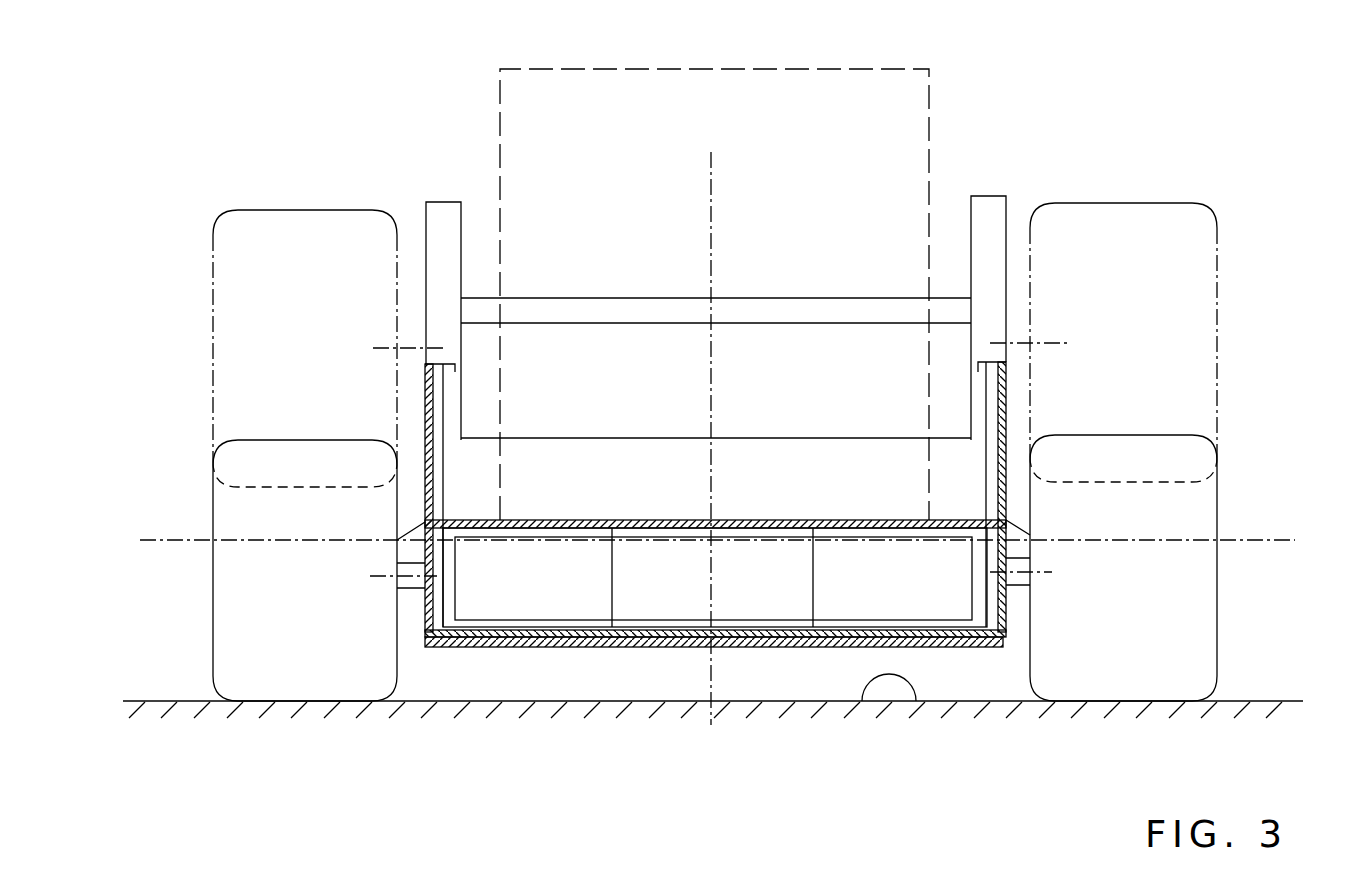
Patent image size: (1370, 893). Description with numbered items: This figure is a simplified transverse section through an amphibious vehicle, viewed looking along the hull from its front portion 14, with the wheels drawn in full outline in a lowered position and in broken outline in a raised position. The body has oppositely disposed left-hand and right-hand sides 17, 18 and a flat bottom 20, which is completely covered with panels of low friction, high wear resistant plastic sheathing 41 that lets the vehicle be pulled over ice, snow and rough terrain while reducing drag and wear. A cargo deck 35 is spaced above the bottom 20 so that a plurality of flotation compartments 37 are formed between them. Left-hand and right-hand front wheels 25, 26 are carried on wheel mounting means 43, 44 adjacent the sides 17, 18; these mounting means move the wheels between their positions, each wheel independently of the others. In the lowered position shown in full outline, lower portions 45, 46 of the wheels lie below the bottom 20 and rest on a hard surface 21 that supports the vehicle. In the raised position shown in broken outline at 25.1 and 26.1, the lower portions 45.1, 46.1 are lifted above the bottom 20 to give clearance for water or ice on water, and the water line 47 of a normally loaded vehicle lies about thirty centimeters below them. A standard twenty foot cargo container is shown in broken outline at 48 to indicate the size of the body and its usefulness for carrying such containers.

The front portion 14 is at (747, 338).
The left-hand side 17 is at (462, 388).
The right-hand side 18 is at (971, 380).
The flat bottom 20 is at (730, 633).
The hard surface 21 is at (916, 701).
The left-hand front wheel 25 is at (233, 625).
The left-hand front wheel in raised position 25.1 is at (213, 285).
The right-hand front wheel 26 is at (1180, 617).
The right-hand front wheel in raised position 26.1 is at (1200, 282).
The cargo deck 35 is at (543, 518).
The flotation compartments 37 is at (575, 593).
The plastic sheathing 41 is at (642, 648).
The wheel mounting means 43 is at (430, 200).
The wheel mounting means 44 is at (987, 193).
The lower portion of left wheel 45 is at (287, 702).
The lower portion of left wheel in raised position 45.1 is at (290, 488).
The lower portion of right wheel 46 is at (1110, 702).
The lower portion of right wheel in raised position 46.1 is at (1140, 482).
The water line 47 is at (193, 545).
The cargo container 48 is at (905, 63).